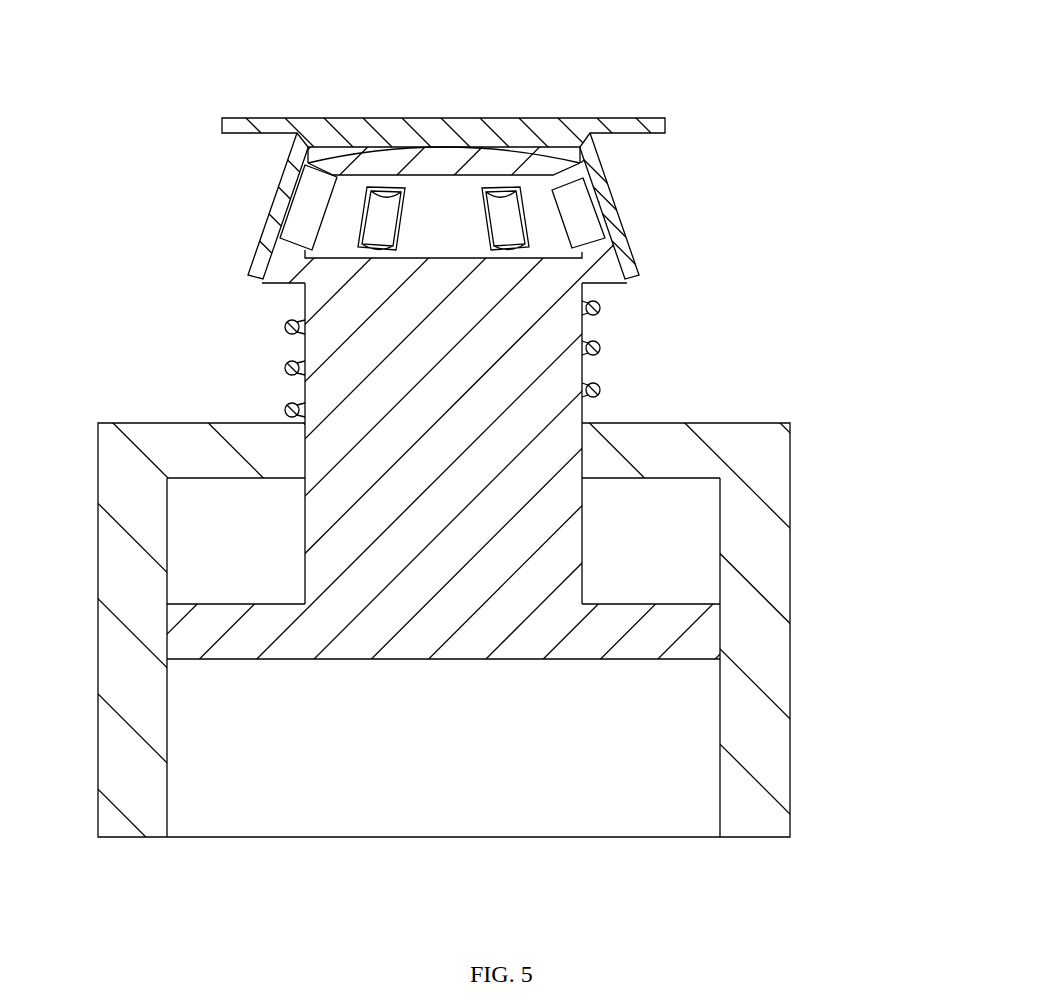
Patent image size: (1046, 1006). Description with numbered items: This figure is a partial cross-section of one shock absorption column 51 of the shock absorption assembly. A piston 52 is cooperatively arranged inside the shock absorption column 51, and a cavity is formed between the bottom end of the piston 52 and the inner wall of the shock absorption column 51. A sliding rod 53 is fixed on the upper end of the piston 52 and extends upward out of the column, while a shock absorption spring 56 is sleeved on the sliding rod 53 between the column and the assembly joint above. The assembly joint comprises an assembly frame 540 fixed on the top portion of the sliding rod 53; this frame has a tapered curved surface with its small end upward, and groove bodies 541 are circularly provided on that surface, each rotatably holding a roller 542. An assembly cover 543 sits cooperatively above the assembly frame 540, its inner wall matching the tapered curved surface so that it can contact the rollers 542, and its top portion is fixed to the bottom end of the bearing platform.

The shock absorption column 51 is at (792, 623).
The piston 52 is at (657, 602).
The sliding rod 53 is at (583, 527).
The shock absorption spring 56 is at (605, 343).
The assembly frame 540 is at (290, 263).
The groove body 541 is at (363, 202).
The roller 542 is at (587, 207).
The assembly cover 543 is at (455, 118).